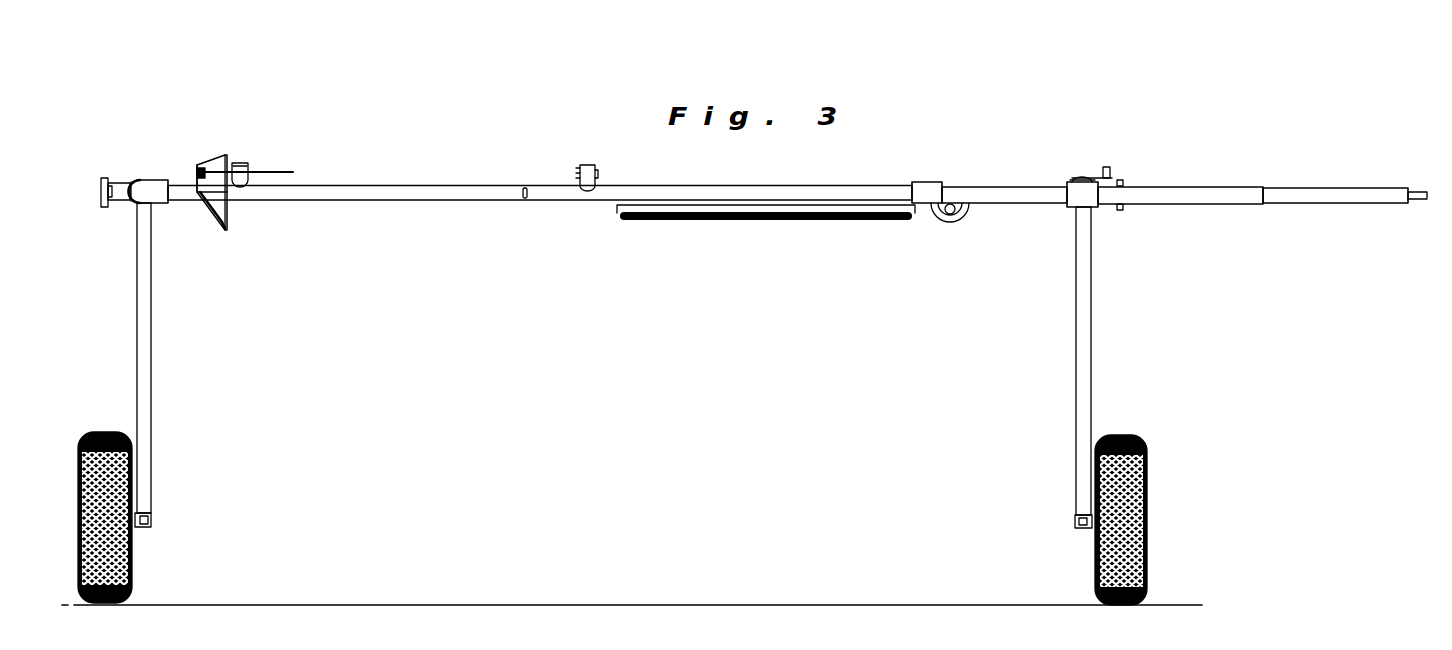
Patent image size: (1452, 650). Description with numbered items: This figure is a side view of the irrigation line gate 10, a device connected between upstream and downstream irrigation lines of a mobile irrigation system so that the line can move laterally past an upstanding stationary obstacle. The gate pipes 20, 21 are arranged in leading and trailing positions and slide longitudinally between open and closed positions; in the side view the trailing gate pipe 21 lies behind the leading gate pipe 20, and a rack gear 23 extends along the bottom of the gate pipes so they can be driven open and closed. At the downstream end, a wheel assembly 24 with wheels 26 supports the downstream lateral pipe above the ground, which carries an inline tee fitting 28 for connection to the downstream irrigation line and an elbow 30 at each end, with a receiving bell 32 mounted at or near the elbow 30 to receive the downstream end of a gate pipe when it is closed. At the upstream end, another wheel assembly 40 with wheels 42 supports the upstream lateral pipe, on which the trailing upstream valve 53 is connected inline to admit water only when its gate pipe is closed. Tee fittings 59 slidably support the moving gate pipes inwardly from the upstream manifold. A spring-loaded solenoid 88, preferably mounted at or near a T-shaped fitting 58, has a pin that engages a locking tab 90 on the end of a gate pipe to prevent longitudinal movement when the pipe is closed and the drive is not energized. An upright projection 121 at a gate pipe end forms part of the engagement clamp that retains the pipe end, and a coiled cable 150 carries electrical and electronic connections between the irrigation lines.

The irrigation line gate 10 is at (435, 100).
The leading gate pipe 20 is at (373, 201).
The trailing gate pipe 21 is at (1283, 200).
The rack gear 23 is at (1203, 205).
The wheel assembly 24 is at (158, 357).
The wheel 26 is at (130, 566).
The inline tee connection or fitting 28 is at (117, 190).
The elbow 30 is at (146, 182).
The receiving bell 32 is at (218, 222).
The wheel assembly 40 is at (1098, 338).
The wheel 42 is at (1145, 540).
The trailing upstream valve 53 is at (1073, 181).
The T-shaped fitting 58 is at (1085, 197).
The tee fitting 59 is at (923, 185).
The spring-loaded solenoid 88 is at (1108, 168).
The locking tab 90 is at (1418, 190).
The upright projection 121 is at (592, 165).
The coiled cable 150 is at (688, 222).